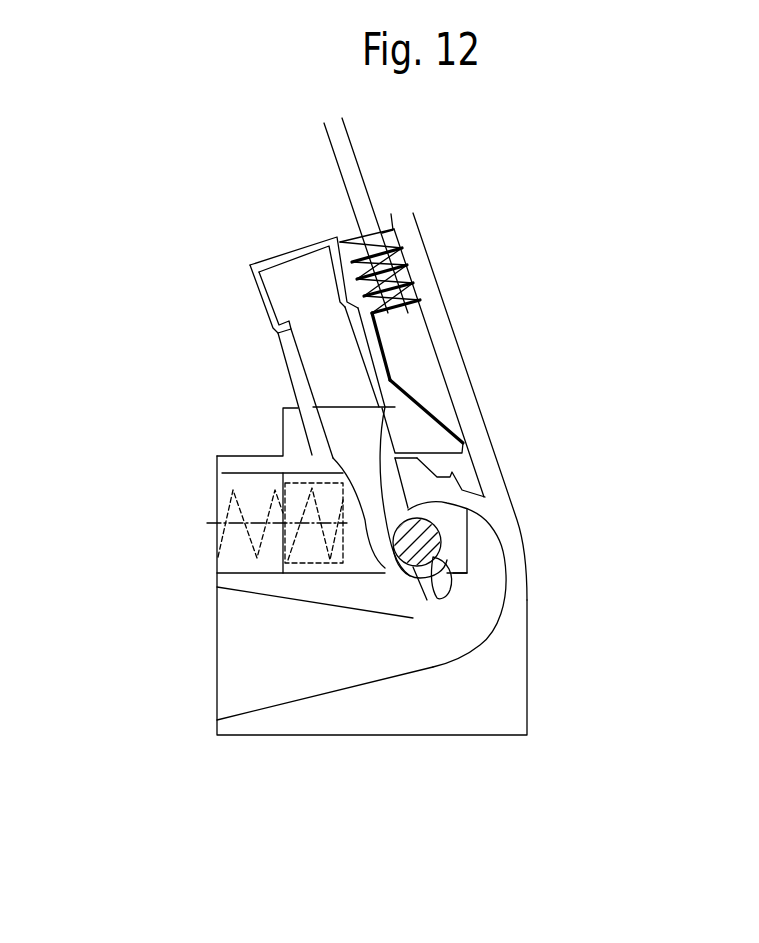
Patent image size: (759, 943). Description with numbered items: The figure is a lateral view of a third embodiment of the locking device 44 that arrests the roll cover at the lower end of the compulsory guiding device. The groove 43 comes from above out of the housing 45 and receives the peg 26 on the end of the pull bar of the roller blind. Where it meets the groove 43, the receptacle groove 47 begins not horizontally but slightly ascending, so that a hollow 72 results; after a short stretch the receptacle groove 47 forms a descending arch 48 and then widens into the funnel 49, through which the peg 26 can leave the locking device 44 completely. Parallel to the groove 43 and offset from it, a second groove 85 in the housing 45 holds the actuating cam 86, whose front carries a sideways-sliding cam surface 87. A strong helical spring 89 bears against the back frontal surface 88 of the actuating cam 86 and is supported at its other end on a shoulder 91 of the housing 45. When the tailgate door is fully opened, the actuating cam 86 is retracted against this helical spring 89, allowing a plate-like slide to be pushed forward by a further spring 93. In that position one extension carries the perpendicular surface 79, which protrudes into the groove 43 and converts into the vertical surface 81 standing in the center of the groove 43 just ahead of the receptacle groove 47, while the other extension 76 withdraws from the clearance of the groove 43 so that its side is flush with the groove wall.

The peg 26 is at (430, 585).
The groove 43 is at (297, 290).
The locking device 44 is at (538, 257).
The housing 45 is at (280, 358).
The receptacle groove 47 is at (480, 558).
The arch 48 is at (480, 598).
The funnel 49 is at (259, 683).
The hollow 72 is at (400, 580).
The extension 76 is at (437, 447).
The perpendicular surface 79 is at (322, 440).
The vertical surface 81 is at (433, 577).
The groove 85 is at (436, 364).
The actuating cam 86 is at (410, 340).
The cam surface 87 is at (442, 420).
The back frontal surface 88 is at (413, 300).
The helical spring 89 is at (388, 278).
The shoulder 91 is at (385, 218).
The spring 93 is at (252, 545).